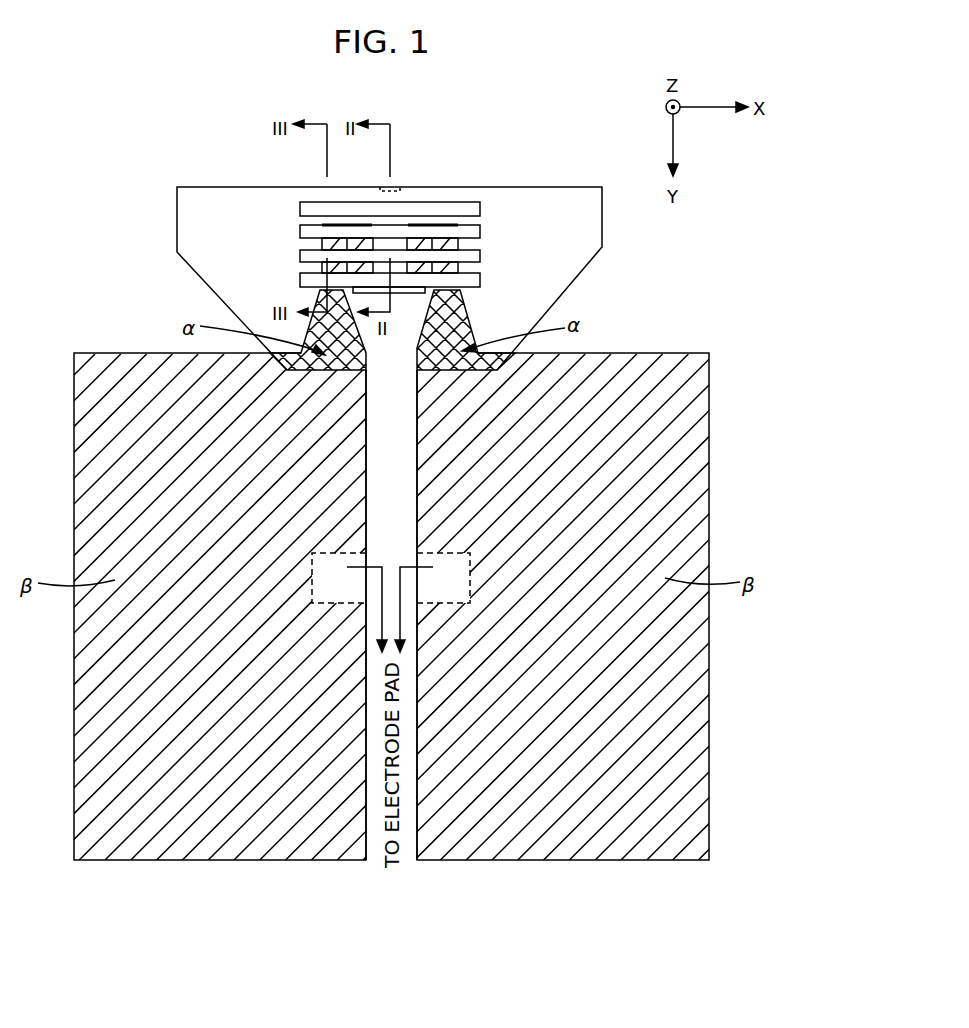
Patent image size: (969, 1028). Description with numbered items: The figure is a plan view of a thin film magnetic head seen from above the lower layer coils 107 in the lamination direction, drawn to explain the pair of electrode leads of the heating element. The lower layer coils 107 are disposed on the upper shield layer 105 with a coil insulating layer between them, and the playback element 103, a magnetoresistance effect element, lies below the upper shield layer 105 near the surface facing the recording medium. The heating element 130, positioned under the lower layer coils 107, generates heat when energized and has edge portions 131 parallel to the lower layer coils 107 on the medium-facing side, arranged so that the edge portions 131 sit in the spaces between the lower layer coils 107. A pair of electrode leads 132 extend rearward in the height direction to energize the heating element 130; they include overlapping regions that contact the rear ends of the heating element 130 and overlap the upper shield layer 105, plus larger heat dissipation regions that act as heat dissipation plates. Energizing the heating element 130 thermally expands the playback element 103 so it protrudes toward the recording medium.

The playback element 103 is at (395, 187).
The upper shield layer 105 is at (389, 246).
The lower layer coils 107 is at (378, 246).
The heating element 130 is at (322, 268).
The edge portions 131 is at (330, 223).
The electrode leads 132 is at (457, 842).